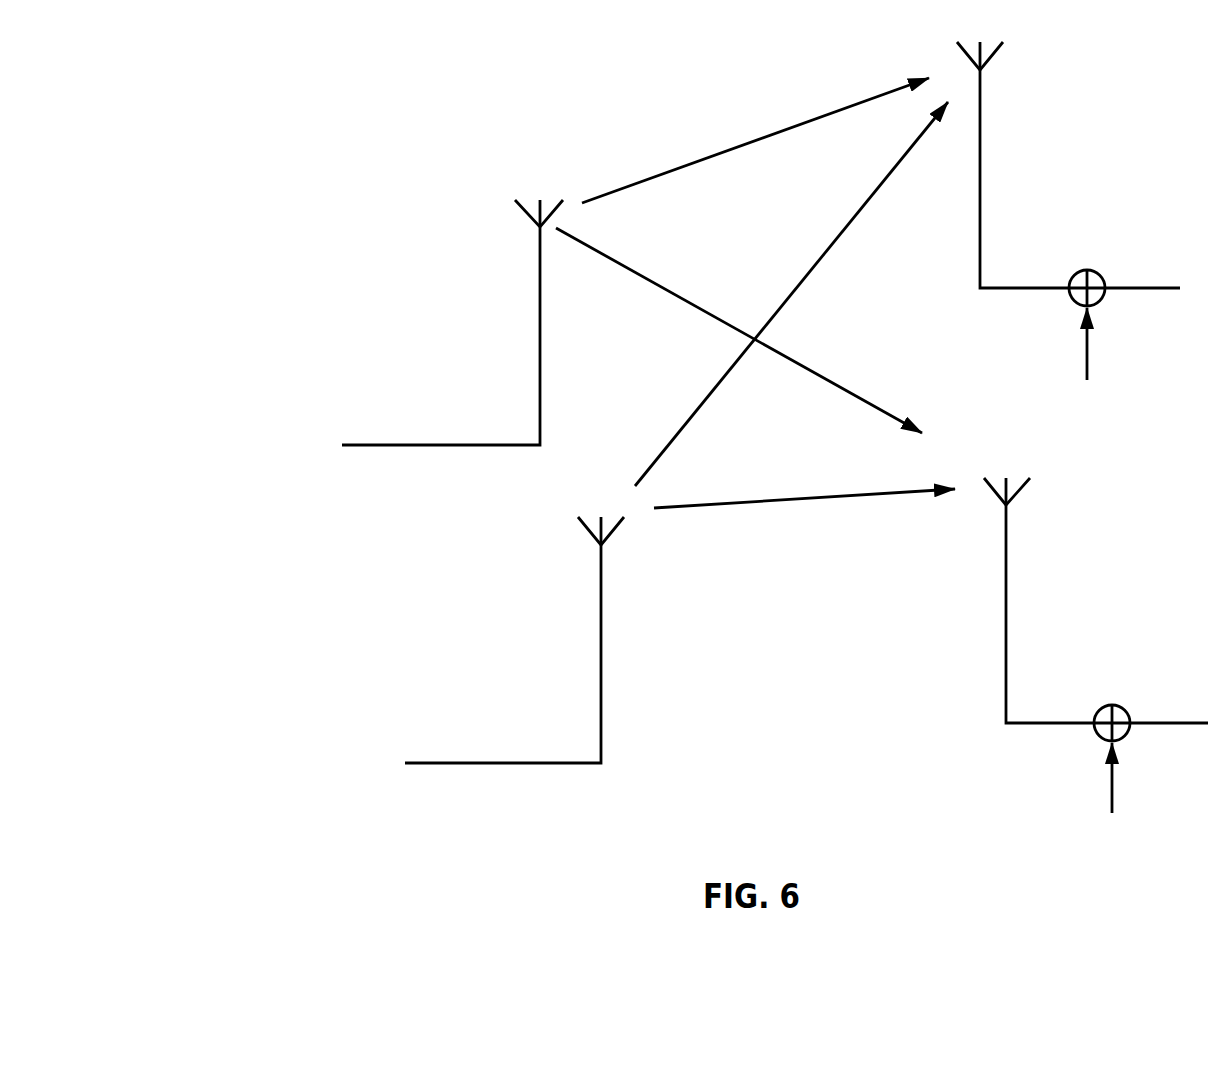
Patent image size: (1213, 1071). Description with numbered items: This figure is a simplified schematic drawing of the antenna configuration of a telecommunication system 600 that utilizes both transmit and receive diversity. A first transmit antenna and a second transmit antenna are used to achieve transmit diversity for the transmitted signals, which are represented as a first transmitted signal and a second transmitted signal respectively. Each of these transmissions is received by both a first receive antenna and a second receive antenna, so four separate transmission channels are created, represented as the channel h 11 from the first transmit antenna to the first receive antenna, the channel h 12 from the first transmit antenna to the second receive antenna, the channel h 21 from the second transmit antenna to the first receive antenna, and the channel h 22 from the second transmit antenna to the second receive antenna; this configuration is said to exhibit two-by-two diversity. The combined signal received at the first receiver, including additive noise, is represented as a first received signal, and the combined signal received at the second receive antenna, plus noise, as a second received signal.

The telecommunication system 600 is at (316, 226).
The transmission channel h11 11 is at (755, 140).
The transmission channel h12 12 is at (739, 330).
The transmission channel h21 21 is at (791, 294).
The transmission channel h22 22 is at (804, 515).